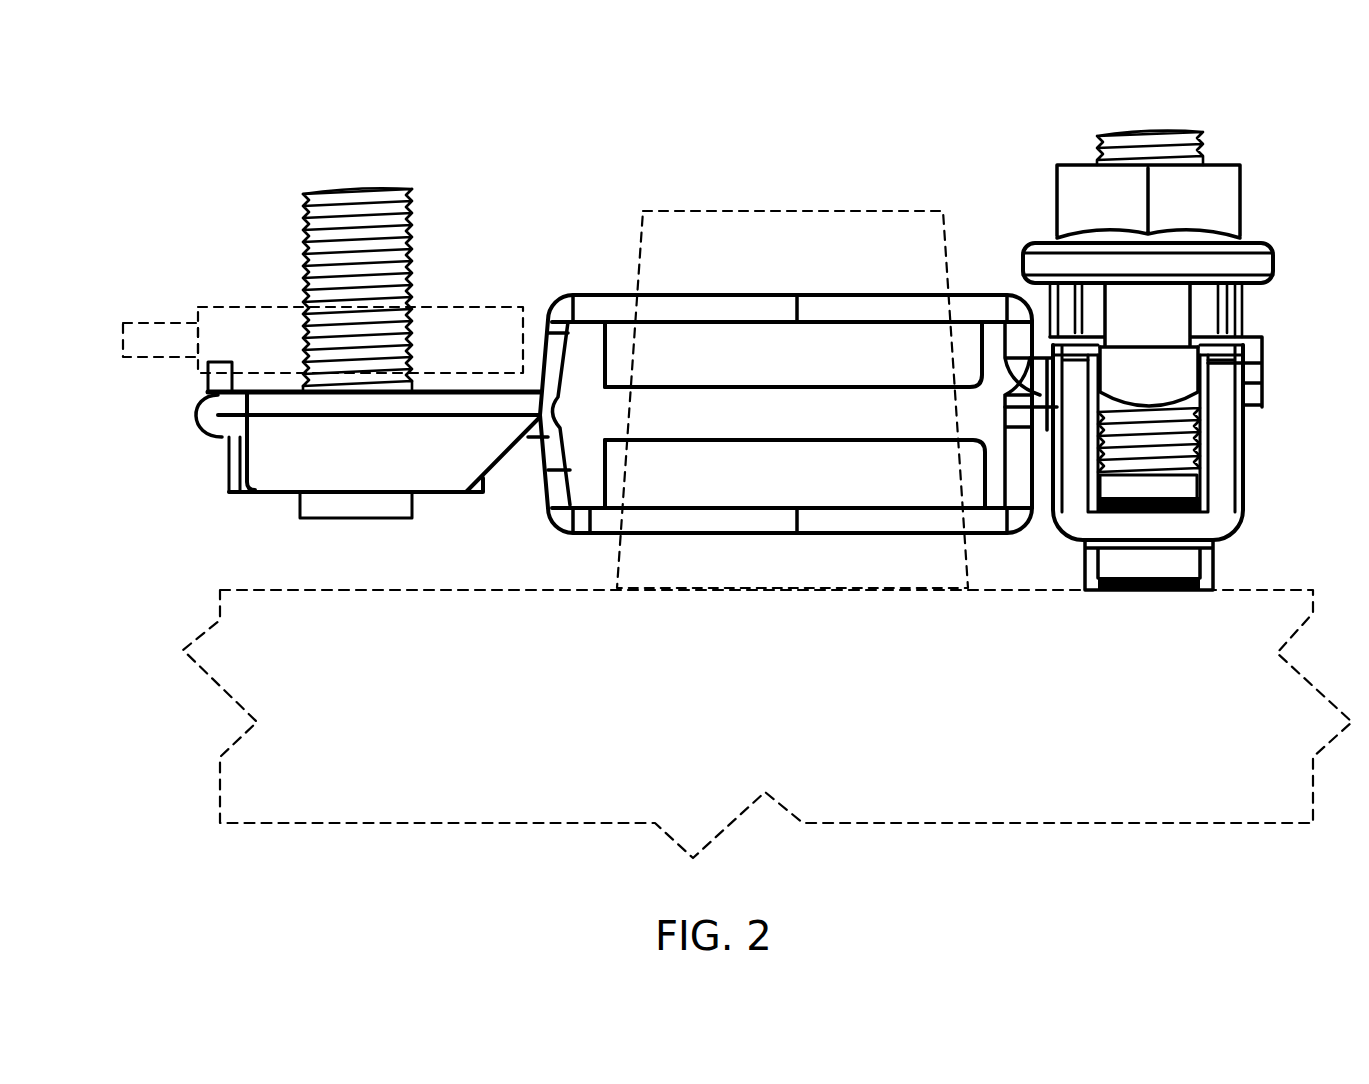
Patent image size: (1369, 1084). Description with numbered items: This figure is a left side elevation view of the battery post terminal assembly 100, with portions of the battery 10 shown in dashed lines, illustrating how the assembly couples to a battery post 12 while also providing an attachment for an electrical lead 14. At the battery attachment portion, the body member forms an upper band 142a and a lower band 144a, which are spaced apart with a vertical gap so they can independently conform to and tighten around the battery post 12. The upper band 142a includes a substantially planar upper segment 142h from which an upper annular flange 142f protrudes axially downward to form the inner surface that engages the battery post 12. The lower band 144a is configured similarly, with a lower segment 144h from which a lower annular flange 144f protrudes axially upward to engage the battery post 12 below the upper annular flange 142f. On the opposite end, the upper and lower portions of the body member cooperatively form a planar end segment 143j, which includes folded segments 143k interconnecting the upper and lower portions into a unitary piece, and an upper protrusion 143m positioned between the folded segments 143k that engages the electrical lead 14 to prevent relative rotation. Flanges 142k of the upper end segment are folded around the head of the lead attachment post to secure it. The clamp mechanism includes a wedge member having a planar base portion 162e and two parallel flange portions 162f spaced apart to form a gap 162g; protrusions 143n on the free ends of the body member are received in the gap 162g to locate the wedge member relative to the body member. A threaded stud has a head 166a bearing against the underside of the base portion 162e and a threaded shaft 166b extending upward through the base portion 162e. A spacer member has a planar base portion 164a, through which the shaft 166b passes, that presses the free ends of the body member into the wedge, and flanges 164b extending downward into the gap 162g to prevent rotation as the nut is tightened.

The battery post terminal assembly 100 is at (362, 100).
The electrical lead 14 is at (212, 308).
The battery post 12 is at (770, 210).
The battery 10 is at (220, 800).
The upper band 142a is at (790, 268).
The upper annular flange 142f is at (603, 368).
The upper segment 142h is at (628, 297).
The flanges 142k is at (325, 497).
The end segment 143j is at (288, 455).
The folded segments 143k is at (218, 415).
The upper protrusion 143m is at (210, 375).
The protrusions 143n is at (1193, 402).
The lower band 144a is at (822, 545).
The lower annular flange 144f is at (600, 460).
The lower segment 144h is at (713, 515).
The base portion 162e is at (1147, 525).
The flange portions 162f is at (1080, 452).
The gap 162g is at (1215, 425).
The base portion 164a is at (1240, 300).
The flanges 164b is at (1175, 376).
The head 166a is at (1087, 545).
The threaded shaft 166b is at (1200, 132).